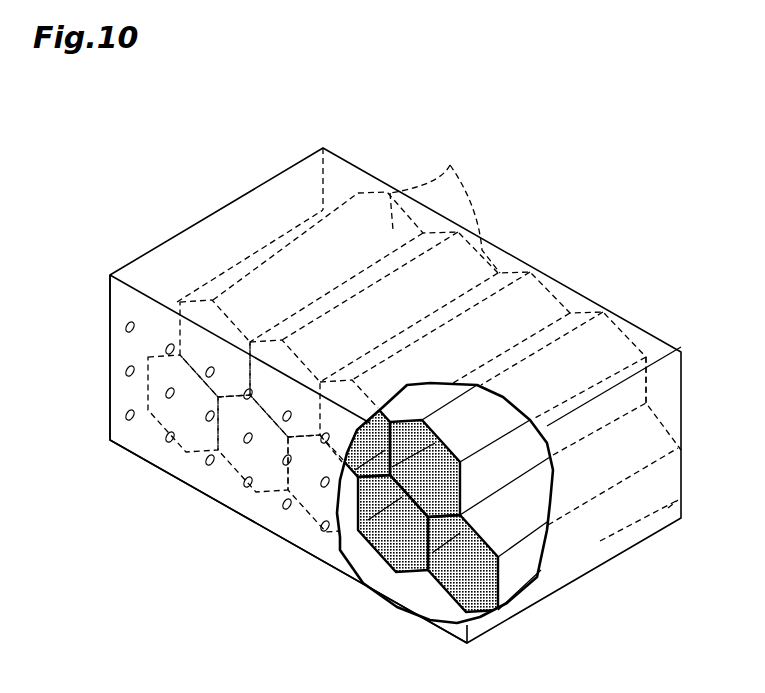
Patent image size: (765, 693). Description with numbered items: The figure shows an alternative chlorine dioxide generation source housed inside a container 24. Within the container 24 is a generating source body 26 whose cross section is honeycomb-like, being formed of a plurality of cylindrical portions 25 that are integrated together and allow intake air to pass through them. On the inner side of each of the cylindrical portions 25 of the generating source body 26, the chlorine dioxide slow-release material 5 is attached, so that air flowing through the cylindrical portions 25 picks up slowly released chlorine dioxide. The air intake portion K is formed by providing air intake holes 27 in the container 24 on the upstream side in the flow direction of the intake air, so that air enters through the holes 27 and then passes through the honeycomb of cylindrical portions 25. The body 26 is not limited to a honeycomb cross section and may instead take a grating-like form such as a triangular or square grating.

The container 24 is at (198, 257).
The cylindrical portions 25 is at (605, 610).
The generating source body 26 is at (600, 353).
The air intake holes 27 is at (126, 415).
The chlorine dioxide slow-release material 5 is at (457, 577).
The air intake portion K is at (144, 448).